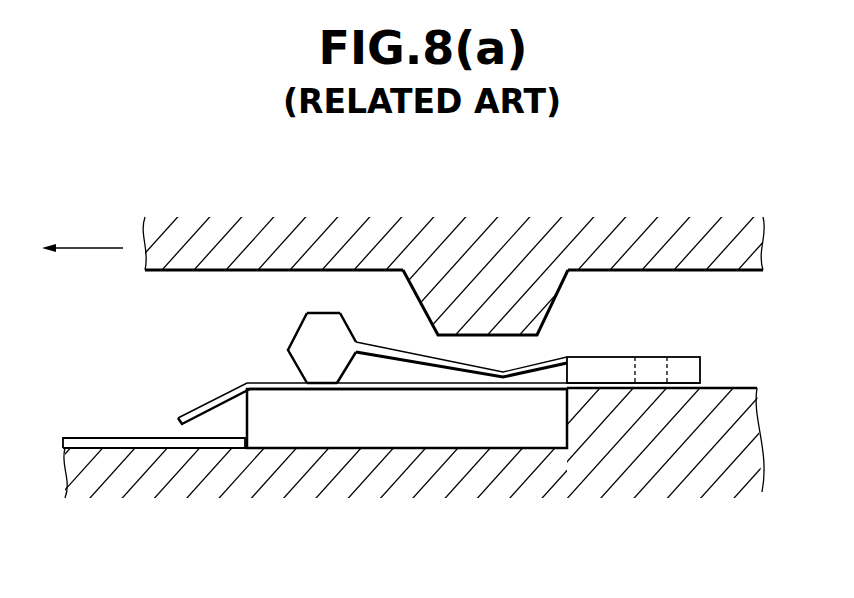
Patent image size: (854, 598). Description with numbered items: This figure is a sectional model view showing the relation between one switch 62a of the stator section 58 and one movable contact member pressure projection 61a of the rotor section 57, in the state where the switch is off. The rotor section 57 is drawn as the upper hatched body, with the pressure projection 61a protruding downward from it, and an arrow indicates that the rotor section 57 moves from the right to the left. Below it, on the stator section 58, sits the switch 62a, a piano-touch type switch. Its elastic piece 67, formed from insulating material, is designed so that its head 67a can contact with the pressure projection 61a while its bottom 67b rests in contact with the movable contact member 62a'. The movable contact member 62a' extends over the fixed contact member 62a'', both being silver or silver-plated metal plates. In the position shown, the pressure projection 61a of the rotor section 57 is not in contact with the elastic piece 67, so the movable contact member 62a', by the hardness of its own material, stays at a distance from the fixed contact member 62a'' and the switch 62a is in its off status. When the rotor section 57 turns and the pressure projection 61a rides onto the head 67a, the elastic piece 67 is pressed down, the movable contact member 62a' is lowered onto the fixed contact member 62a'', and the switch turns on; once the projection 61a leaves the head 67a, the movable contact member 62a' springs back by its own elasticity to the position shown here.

The rotor section 57 is at (657, 240).
The movable contact member pressure projection 61a is at (527, 300).
The elastic piece 67 is at (437, 331).
The head of the elastic piece 67a is at (323, 312).
The bottom of the elastic piece 67b is at (323, 382).
The switch 62a is at (375, 392).
The movable contact member 62a' is at (403, 473).
The fixed contact member 62a'' is at (154, 496).
The stator section 58 is at (660, 472).